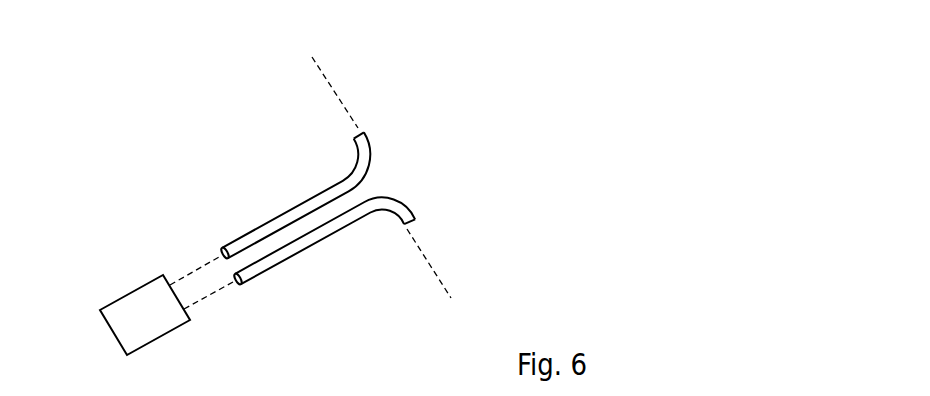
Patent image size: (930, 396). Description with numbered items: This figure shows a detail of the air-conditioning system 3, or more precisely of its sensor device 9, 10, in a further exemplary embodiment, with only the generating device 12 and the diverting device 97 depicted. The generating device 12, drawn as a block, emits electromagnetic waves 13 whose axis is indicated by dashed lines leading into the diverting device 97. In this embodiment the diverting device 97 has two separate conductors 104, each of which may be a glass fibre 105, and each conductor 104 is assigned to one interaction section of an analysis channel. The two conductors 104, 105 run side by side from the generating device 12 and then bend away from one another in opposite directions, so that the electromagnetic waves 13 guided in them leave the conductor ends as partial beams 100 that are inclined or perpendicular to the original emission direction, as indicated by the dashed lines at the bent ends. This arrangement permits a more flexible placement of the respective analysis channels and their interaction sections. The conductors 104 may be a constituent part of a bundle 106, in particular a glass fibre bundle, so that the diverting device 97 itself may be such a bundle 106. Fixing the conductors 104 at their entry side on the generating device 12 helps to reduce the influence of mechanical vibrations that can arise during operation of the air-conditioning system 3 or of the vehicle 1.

The vehicle 1 is at (647, 150).
The air-conditioning system 3 is at (645, 189).
The sensor device 9 is at (110, 152).
The hydraulic unit housing 10 is at (336, 206).
The generating device 12 is at (154, 326).
The electromagnetic waves 13 is at (197, 270).
The diverting device 97 is at (393, 175).
The partial beam 100 is at (343, 89).
The conductor 104 is at (280, 222).
The glass fibre 105 is at (293, 248).
The bundle 106 is at (317, 224).